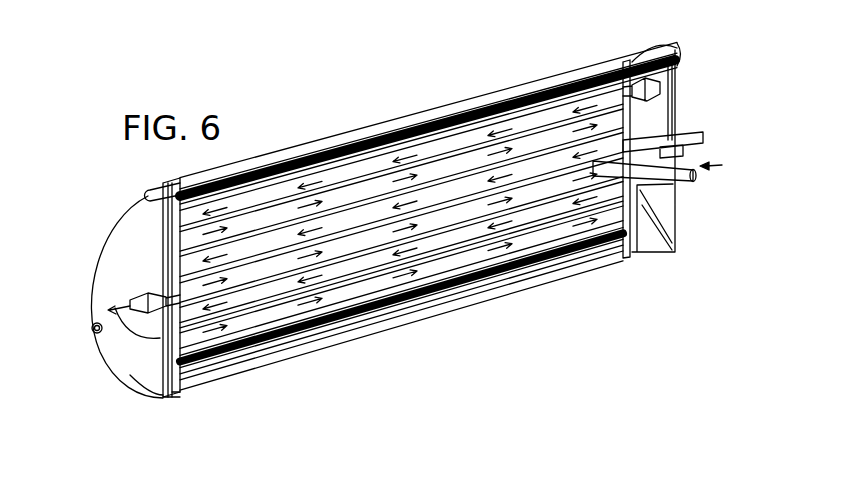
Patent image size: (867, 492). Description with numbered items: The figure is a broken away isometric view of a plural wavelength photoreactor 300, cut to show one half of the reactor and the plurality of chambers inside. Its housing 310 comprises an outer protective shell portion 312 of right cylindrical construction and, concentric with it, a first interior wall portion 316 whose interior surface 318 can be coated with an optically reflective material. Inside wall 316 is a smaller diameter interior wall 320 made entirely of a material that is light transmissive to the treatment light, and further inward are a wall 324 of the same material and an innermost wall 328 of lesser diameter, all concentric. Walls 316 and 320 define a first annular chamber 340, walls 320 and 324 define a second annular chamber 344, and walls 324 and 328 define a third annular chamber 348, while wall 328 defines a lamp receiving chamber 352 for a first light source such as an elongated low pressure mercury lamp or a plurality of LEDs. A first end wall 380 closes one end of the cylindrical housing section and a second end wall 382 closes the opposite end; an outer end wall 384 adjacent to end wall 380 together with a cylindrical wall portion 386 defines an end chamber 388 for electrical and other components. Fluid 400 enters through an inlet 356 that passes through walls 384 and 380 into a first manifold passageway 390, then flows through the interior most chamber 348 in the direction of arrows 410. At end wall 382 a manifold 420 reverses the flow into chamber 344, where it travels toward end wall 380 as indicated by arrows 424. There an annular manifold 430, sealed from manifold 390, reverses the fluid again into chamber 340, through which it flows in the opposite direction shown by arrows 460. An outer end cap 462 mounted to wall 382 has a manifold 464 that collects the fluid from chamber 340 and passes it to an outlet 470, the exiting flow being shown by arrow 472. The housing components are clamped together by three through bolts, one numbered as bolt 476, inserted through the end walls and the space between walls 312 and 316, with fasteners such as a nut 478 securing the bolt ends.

The photoreactor 300 is at (222, 432).
The housing 310 is at (503, 327).
The outer protective shell portion 312 is at (353, 340).
The first interior wall portion 316 is at (401, 298).
The interior surface 318 is at (437, 262).
The interior wall 320 is at (332, 320).
The wall 324 is at (285, 318).
The wall 328 is at (233, 283).
The first annular chamber 340 is at (547, 253).
The second annular chamber 344 is at (448, 285).
The third annular chamber 348 is at (582, 250).
The lamp receiving chamber 352 is at (530, 200).
The inlet 356 is at (687, 180).
The first end wall 380 is at (637, 254).
The second end wall 382 is at (178, 395).
The outer end wall 384 is at (677, 79).
The wall portion 386 is at (640, 50).
The end chamber 388 is at (660, 102).
The first manifold passageway 390 is at (643, 140).
The fluid 400 is at (722, 165).
The arrows 410 is at (365, 258).
The manifold 420 is at (170, 272).
The arrows 424 is at (250, 298).
The manifold 430 is at (673, 238).
The arrows 460 is at (489, 131).
The outer end cap 462 is at (138, 372).
The manifold 464 is at (175, 335).
The outlet 470 is at (100, 330).
The arrow 472 is at (122, 300).
The through bolt 476 is at (211, 188).
The nut 478 is at (93, 318).